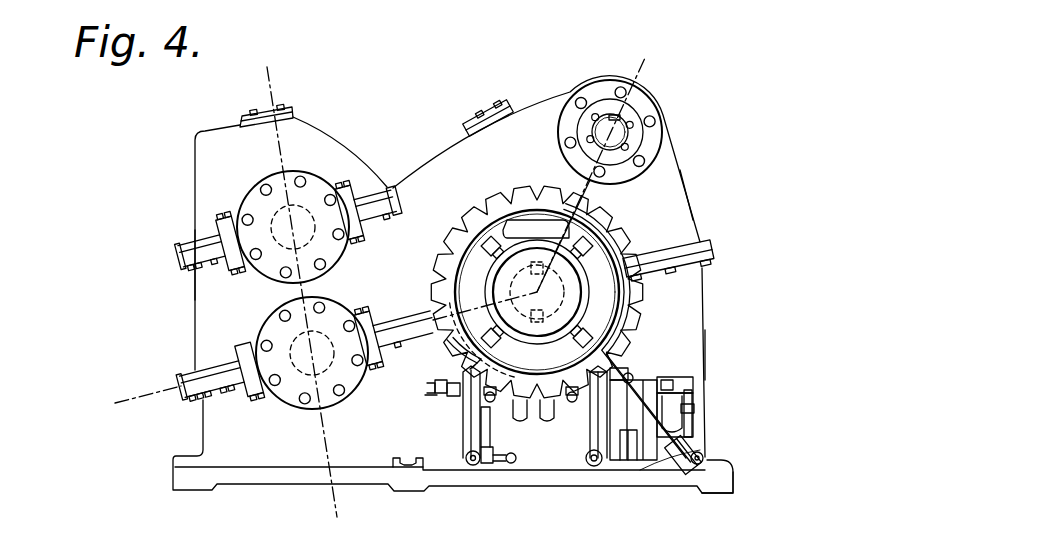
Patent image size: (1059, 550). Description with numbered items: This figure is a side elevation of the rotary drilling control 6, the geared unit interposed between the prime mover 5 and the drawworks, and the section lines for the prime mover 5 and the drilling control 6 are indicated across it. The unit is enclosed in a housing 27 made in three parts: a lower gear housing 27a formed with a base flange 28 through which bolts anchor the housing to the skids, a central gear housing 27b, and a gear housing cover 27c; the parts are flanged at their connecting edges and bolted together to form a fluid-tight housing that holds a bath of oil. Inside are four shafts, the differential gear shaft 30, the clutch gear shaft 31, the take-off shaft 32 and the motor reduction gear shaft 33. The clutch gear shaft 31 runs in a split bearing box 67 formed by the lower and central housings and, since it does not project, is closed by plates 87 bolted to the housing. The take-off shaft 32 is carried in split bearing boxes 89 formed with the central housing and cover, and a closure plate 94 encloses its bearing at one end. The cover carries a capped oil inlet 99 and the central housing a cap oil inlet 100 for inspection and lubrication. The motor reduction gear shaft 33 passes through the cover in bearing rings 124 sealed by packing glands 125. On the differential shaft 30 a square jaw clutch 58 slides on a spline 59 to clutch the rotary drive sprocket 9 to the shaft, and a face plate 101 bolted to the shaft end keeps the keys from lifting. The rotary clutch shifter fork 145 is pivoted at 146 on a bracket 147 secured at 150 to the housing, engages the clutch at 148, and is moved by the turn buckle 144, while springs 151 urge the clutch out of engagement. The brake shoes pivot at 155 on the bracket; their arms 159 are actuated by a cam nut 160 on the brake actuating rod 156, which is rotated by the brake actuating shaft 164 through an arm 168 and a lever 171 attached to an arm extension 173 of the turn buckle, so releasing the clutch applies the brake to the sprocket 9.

The prime mover 5 is at (121, 386).
The rotary drilling control 6 is at (265, 80).
The rotary drive sprocket 9 is at (608, 244).
The housing 27 is at (206, 297).
The lower gear housing 27a is at (697, 343).
The central gear housing 27b is at (668, 190).
The gear housing cover 27c is at (203, 187).
The base flange 28 is at (722, 480).
The differential gear shaft 30 is at (440, 258).
The clutch gear shaft 31 is at (294, 372).
The take-off shaft 32 is at (300, 204).
The motor reduction gear shaft 33 is at (618, 133).
The square jaw clutch 58 is at (484, 291).
The spline 59 is at (478, 217).
The split bearing box 67 is at (374, 322).
The plates 87 is at (350, 390).
The split bearing boxes 89 is at (352, 223).
The closure plate 94 is at (253, 194).
The capped oil inlet 99 is at (273, 112).
The cap oil inlet 100 is at (478, 112).
The face plate 101 is at (567, 303).
The bearing rings 124 is at (647, 147).
The packing glands 125 is at (630, 143).
The turn buckle 144 is at (702, 446).
The rotary clutch shifter fork 145 is at (657, 440).
The pivot 146 is at (624, 368).
The bracket 147 is at (569, 450).
The clutch engagement 148 is at (592, 224).
The bracket fastening 150 is at (511, 465).
The springs 151 is at (706, 462).
The brake shoe pivots 155 is at (466, 458).
The brake actuating rod 156 is at (444, 401).
The arms 159 is at (473, 436).
The cam nut 160 is at (432, 398).
The brake actuating shaft 164 is at (645, 383).
The arm 168 is at (697, 400).
The lever 171 is at (694, 416).
The arm extension 173 is at (692, 427).